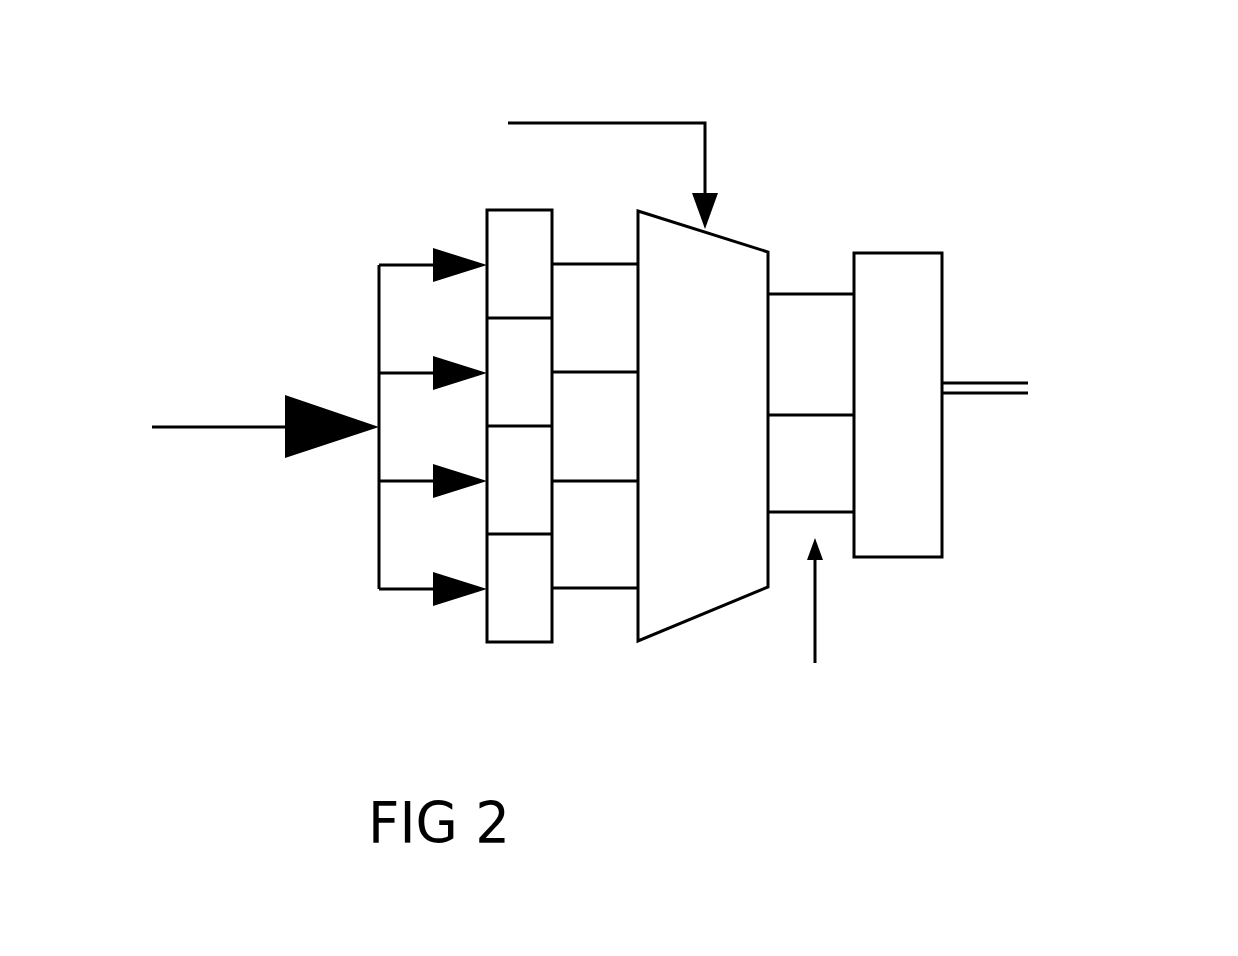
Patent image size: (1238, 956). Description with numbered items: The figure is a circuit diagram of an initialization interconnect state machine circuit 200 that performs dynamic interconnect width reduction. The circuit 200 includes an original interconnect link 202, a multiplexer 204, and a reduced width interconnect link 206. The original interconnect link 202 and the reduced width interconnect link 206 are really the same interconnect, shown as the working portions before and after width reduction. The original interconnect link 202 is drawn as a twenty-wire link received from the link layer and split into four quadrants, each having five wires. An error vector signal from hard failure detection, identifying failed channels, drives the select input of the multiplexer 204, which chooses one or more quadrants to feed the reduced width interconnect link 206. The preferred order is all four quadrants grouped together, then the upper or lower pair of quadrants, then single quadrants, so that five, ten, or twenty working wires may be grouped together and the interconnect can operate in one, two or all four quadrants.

The initialization interconnect state machine circuit 200 is at (868, 118).
The original interconnect link 202 is at (527, 642).
The multiplexer 204 is at (653, 641).
The reduced width interconnect link 206 is at (887, 557).